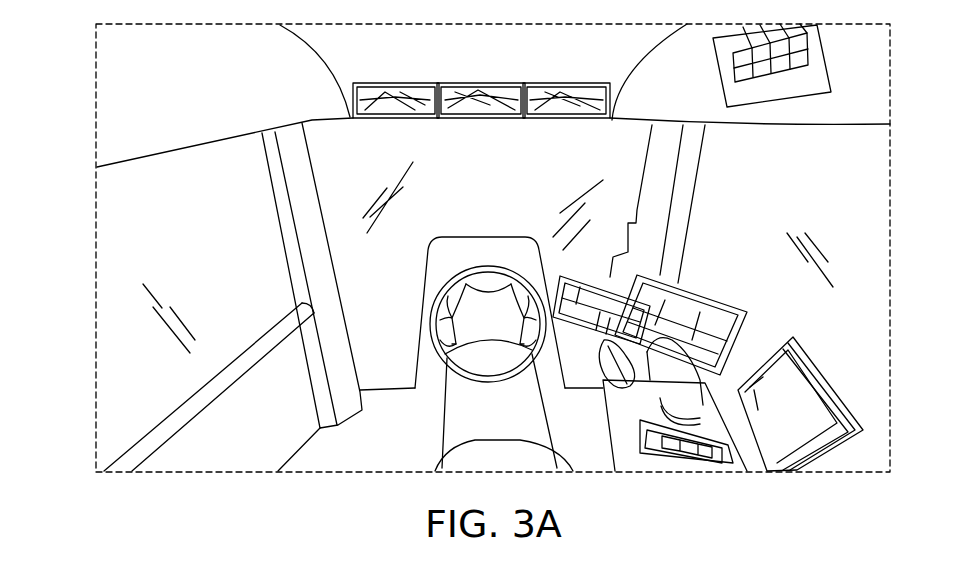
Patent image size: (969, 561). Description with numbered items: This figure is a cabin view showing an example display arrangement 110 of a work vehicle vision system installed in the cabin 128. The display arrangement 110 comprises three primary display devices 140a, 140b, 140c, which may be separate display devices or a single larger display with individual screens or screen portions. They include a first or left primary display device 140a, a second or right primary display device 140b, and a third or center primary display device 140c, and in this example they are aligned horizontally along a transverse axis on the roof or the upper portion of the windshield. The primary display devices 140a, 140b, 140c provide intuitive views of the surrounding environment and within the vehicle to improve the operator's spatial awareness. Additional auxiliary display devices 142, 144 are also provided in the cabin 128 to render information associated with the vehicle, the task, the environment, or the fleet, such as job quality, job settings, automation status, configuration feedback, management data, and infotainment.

The display arrangement 110 is at (237, 82).
The cabin 128 is at (140, 233).
The first primary display device 140a is at (393, 113).
The second primary display device 140b is at (587, 112).
The third primary display device 140c is at (487, 112).
The auxiliary display device 142 is at (733, 290).
The auxiliary display device 144 is at (802, 102).